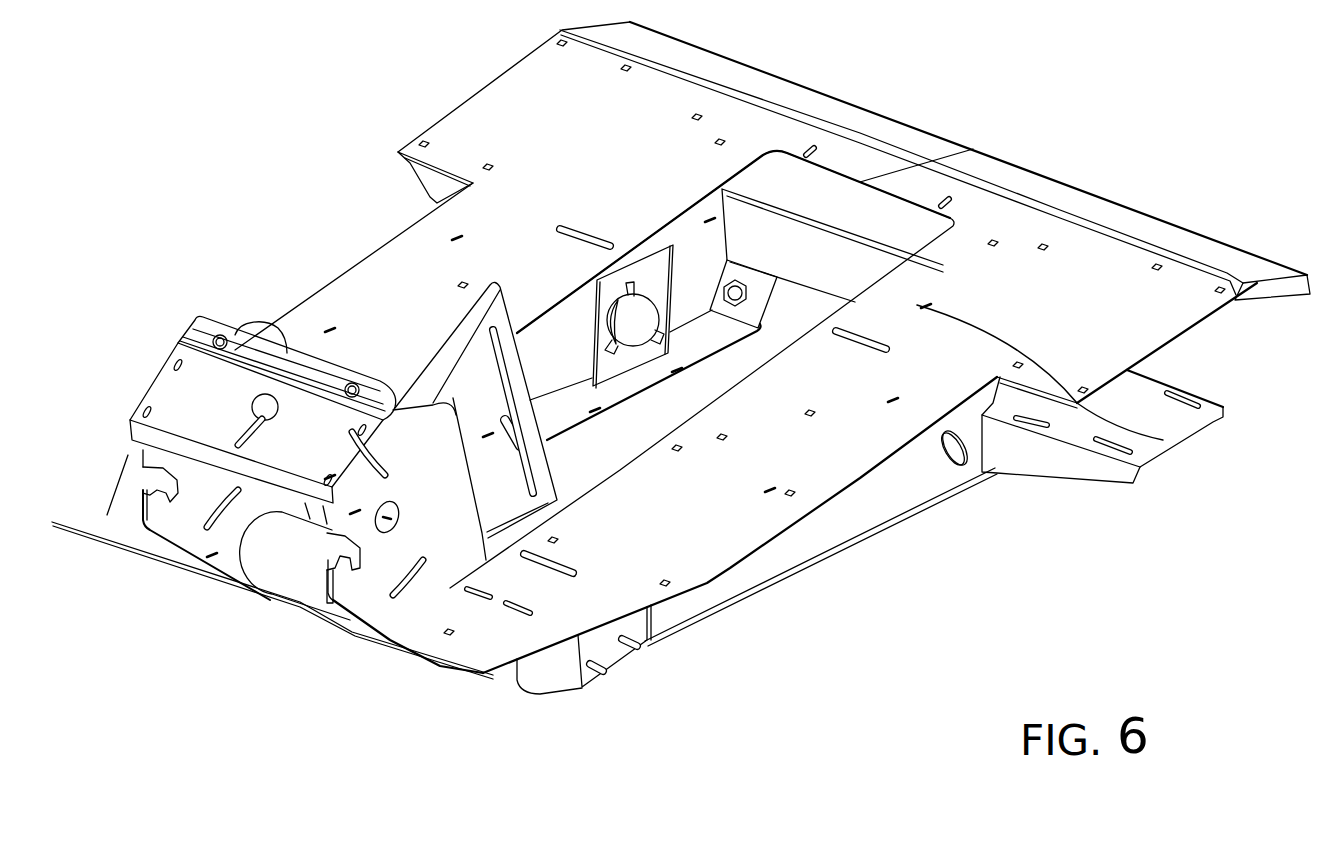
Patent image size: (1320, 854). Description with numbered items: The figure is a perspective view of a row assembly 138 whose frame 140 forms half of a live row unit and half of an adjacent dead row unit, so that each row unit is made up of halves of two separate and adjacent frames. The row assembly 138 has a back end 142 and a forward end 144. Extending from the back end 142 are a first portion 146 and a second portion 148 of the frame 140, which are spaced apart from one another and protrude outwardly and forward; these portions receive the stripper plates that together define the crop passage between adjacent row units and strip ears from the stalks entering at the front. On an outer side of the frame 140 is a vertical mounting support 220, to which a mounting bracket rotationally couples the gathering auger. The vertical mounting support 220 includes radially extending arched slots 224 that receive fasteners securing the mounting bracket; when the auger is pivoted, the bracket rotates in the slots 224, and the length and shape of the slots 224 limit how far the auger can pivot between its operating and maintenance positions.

The row assembly 138 is at (1094, 158).
The frame 140 is at (1165, 445).
The back end 142 is at (850, 153).
The forward end 144 is at (292, 548).
The first portion 146 is at (378, 262).
The second portion 148 is at (877, 508).
The vertical mounting support 220 is at (192, 530).
The arched slots 224 is at (455, 458).